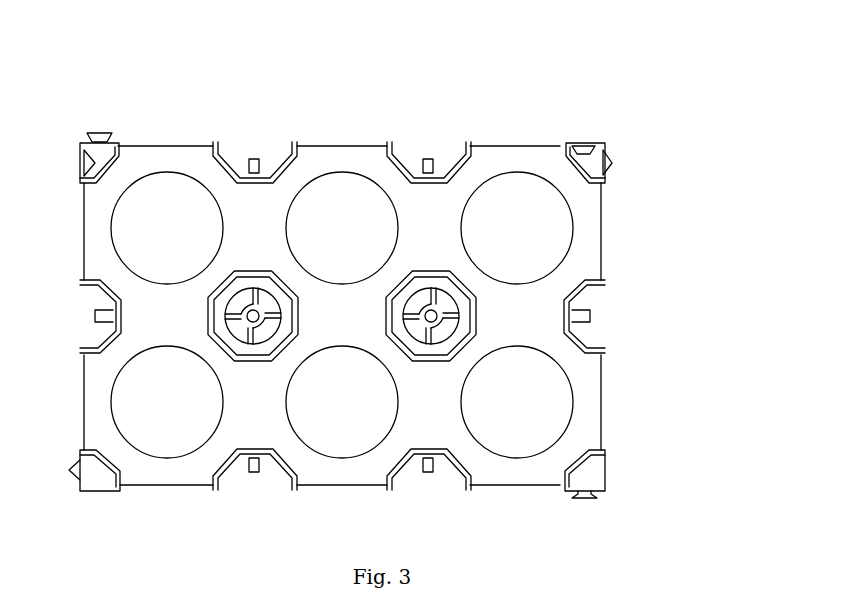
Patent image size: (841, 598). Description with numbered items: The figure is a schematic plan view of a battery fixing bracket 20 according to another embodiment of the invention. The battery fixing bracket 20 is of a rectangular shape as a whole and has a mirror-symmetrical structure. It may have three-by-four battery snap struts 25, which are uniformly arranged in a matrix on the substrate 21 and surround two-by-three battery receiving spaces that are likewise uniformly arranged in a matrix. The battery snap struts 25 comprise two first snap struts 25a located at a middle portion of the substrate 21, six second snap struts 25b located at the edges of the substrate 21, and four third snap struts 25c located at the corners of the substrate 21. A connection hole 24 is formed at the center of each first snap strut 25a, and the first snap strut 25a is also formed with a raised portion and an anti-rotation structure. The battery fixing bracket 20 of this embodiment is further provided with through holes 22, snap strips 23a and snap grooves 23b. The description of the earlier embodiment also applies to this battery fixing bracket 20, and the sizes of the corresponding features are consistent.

The battery fixing bracket 20 is at (380, 273).
The substrate 21 is at (431, 230).
The through hole 22 is at (350, 218).
The snap strip 23a is at (100, 133).
The snap groove 23b is at (82, 160).
The connection hole 24 is at (252, 318).
The battery snap strut 25 is at (692, 160).
The first snap strut 25a is at (462, 347).
The second snap strut 25b is at (582, 333).
The third snap strut 25c is at (612, 162).